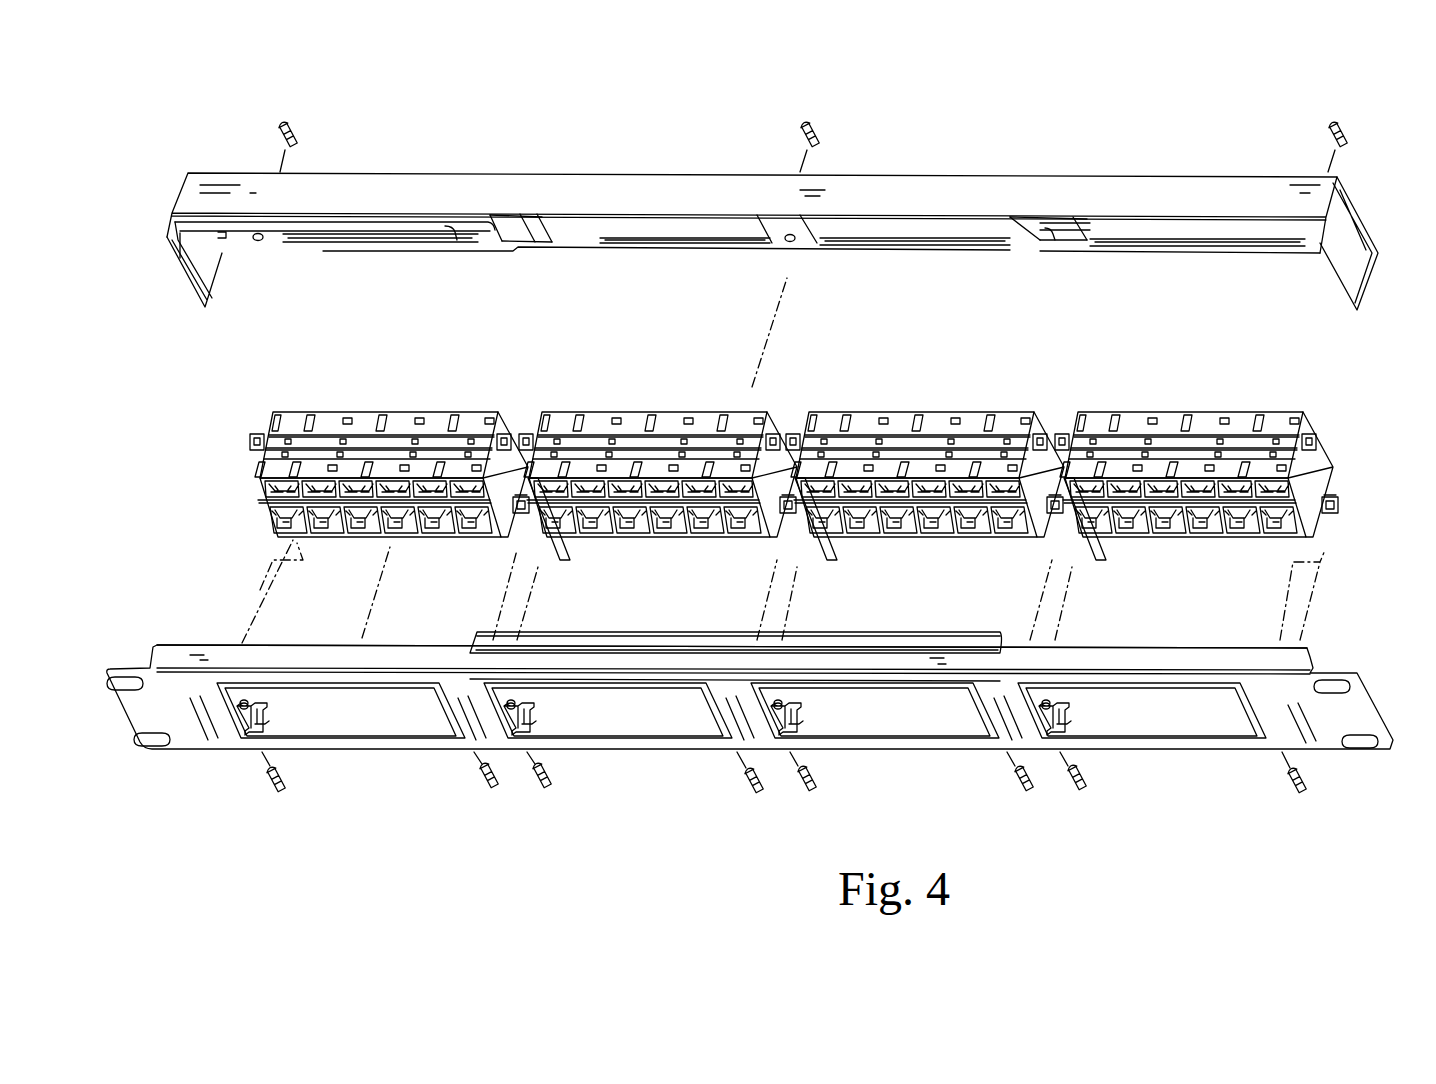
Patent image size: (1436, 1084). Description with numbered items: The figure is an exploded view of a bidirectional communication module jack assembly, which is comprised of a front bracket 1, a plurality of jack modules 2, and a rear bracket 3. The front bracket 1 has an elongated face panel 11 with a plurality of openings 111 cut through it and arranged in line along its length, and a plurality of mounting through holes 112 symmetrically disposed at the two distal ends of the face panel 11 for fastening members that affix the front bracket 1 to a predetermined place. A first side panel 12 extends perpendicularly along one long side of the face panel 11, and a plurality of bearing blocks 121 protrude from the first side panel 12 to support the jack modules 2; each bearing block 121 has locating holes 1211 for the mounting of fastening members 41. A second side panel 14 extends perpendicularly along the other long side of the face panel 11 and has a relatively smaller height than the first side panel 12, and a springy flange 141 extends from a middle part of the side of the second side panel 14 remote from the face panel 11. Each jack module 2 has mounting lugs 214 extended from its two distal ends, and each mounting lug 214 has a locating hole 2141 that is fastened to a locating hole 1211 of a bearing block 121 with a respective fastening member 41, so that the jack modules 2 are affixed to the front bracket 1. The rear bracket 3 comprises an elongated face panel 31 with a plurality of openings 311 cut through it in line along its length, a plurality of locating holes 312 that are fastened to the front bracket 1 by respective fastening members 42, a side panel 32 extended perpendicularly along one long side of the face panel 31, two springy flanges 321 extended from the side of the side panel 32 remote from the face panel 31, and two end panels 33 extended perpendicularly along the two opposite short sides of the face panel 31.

The front bracket 1 is at (756, 708).
The face panel 11 is at (693, 752).
The openings 111 is at (1175, 748).
The mounting through holes 112 is at (1372, 750).
The first side panel 12 is at (427, 723).
The bearing blocks 121 is at (1062, 705).
The locating holes 1211 is at (1047, 705).
The second side panel 14 is at (347, 645).
The springy flange 141 is at (700, 630).
The jack modules 2 is at (1205, 405).
The mounting lugs 214 is at (1340, 503).
The locating hole 2141 is at (1340, 520).
The rear bracket 3 is at (570, 158).
The face panel 31 is at (638, 254).
The openings 311 is at (1190, 247).
The locating holes 312 is at (795, 241).
The side panel 32 is at (535, 221).
The springy flanges 321 is at (1062, 236).
The end panels 33 is at (1375, 268).
The fastening members 41 is at (1315, 830).
The fastening members 42 is at (1345, 127).